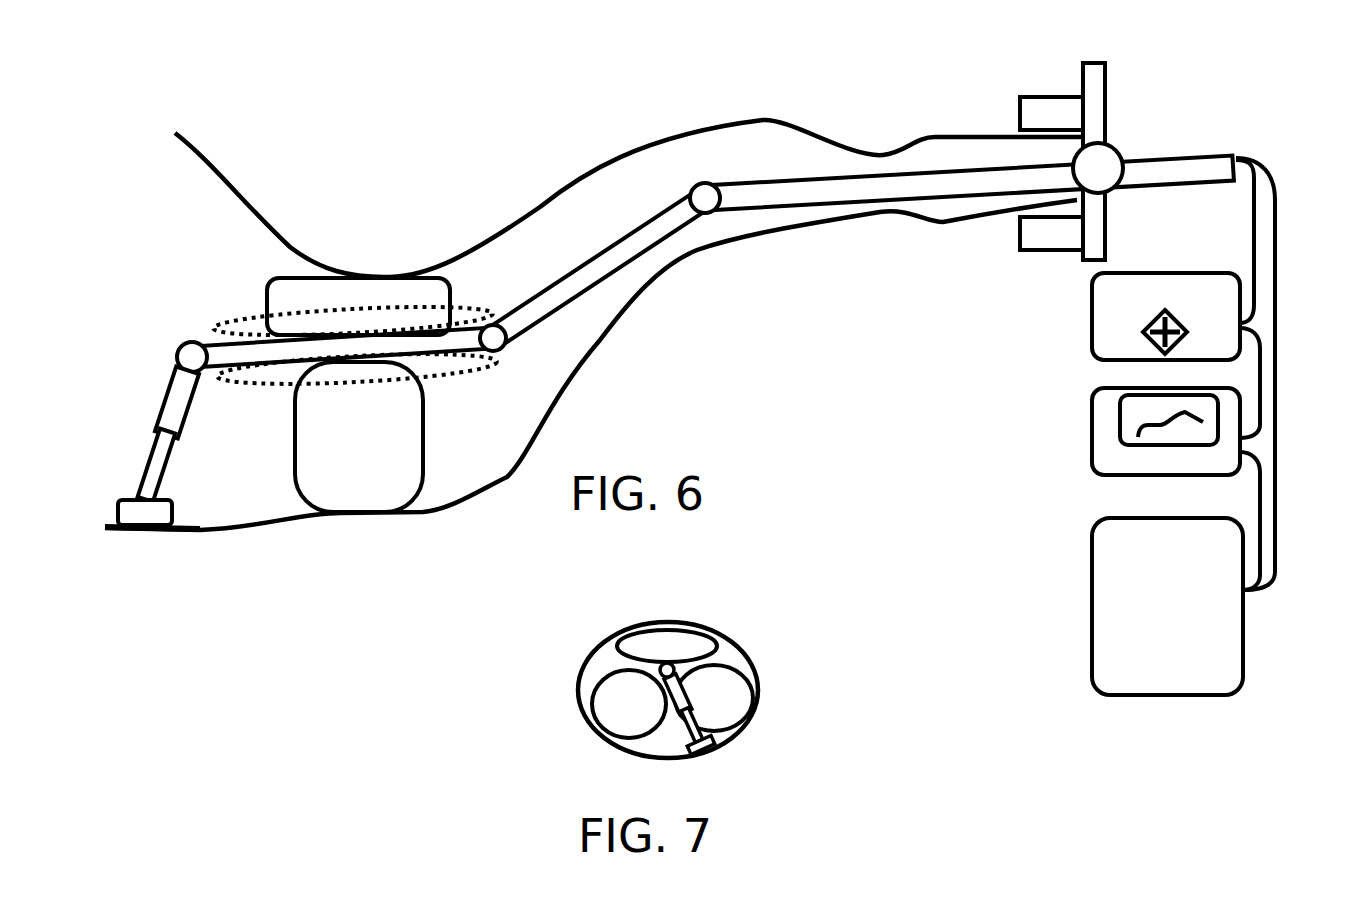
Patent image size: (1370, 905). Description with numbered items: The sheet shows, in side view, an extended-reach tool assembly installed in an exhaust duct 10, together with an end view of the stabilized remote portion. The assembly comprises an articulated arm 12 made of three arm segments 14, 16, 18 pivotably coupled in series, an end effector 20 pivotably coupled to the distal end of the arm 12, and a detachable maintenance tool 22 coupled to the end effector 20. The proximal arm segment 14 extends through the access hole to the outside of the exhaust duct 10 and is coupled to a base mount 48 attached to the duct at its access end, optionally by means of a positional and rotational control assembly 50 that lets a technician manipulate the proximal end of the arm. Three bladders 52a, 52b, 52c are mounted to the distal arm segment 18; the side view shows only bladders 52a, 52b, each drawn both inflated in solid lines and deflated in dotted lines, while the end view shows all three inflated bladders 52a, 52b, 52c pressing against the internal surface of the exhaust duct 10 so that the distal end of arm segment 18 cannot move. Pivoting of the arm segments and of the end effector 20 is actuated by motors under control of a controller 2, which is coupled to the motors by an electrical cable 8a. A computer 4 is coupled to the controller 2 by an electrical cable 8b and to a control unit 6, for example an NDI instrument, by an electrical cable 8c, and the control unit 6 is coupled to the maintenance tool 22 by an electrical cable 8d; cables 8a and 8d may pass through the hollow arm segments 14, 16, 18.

In FIG. 6, the exhaust duct 10 is at (620, 127).
In FIG. 7, the exhaust duct 10 is at (577, 676).
In FIG. 6, the articulated arm 12 is at (636, 274).
In FIG. 6, the arm segment 14 is at (1163, 155).
In FIG. 6, the arm segment 16 is at (555, 315).
In FIG. 6, the arm segment 18 is at (225, 340).
In FIG. 6, the end effector 20 is at (148, 385).
In FIG. 7, the end effector 20 is at (727, 702).
In FIG. 6, the maintenance tool 22 is at (142, 535).
In FIG. 7, the maintenance tool 22 is at (706, 753).
In FIG. 6, the base mount 48 is at (1062, 86).
In FIG. 6, the positional and rotational control assembly 50 is at (1059, 179).
In FIG. 6, the bladder 52a is at (293, 280).
In FIG. 7, the bladder 52a is at (700, 637).
In FIG. 6, the bladder 52b is at (303, 497).
In FIG. 7, the bladder 52b is at (753, 715).
In FIG. 7, the bladder 52c is at (610, 678).
In FIG. 6, the controller 2 is at (1092, 310).
In FIG. 6, the computer 4 is at (1092, 423).
In FIG. 6, the control unit 6 is at (1092, 565).
In FIG. 6, the electrical cable 8a is at (1253, 208).
In FIG. 6, the electrical cable 8b is at (1262, 350).
In FIG. 6, the electrical cable 8c is at (1265, 500).
In FIG. 6, the electrical cable 8d is at (1277, 257).